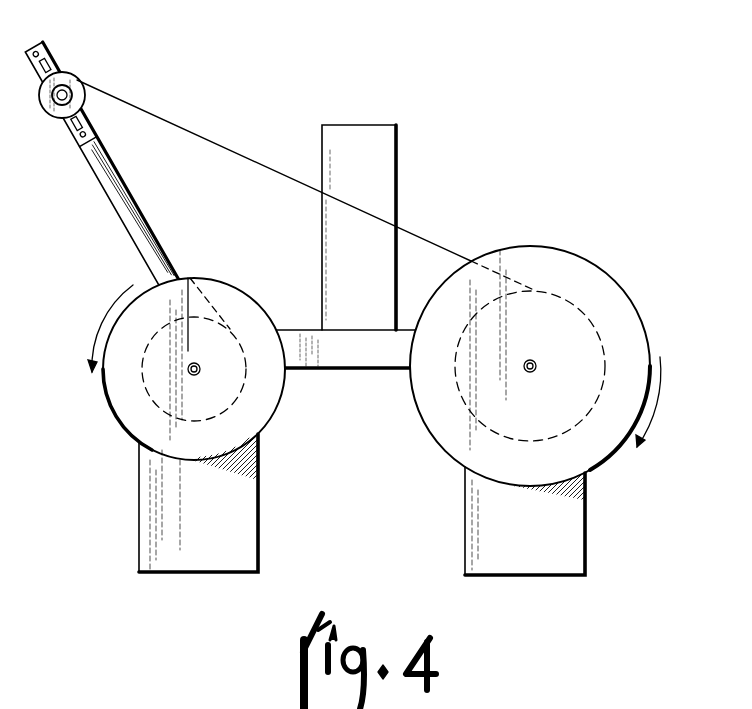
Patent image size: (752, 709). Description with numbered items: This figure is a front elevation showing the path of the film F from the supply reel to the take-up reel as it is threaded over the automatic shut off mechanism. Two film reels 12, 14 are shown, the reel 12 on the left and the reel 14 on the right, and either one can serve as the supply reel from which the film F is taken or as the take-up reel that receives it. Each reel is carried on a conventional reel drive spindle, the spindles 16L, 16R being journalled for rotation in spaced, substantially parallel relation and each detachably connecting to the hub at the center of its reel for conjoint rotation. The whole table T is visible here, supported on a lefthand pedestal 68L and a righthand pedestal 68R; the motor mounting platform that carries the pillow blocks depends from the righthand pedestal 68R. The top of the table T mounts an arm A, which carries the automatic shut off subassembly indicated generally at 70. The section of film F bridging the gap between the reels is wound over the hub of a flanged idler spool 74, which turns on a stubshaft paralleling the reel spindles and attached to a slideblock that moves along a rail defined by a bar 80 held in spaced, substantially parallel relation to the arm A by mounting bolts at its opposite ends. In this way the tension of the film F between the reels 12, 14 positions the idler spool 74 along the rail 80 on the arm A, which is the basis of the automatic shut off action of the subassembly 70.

The arm A is at (113, 161).
The automatic shut off subassembly 70 is at (75, 57).
The flanged idler spool 74 is at (72, 82).
The bar 80 is at (84, 112).
The film F is at (407, 229).
The film reel 12 is at (206, 278).
The film reel 14 is at (602, 267).
The reel drive spindle 16L is at (200, 373).
The reel drive spindle 16R is at (536, 372).
The table T is at (259, 485).
The lefthand pedestal 68L is at (233, 535).
The righthand pedestal 68R is at (572, 534).